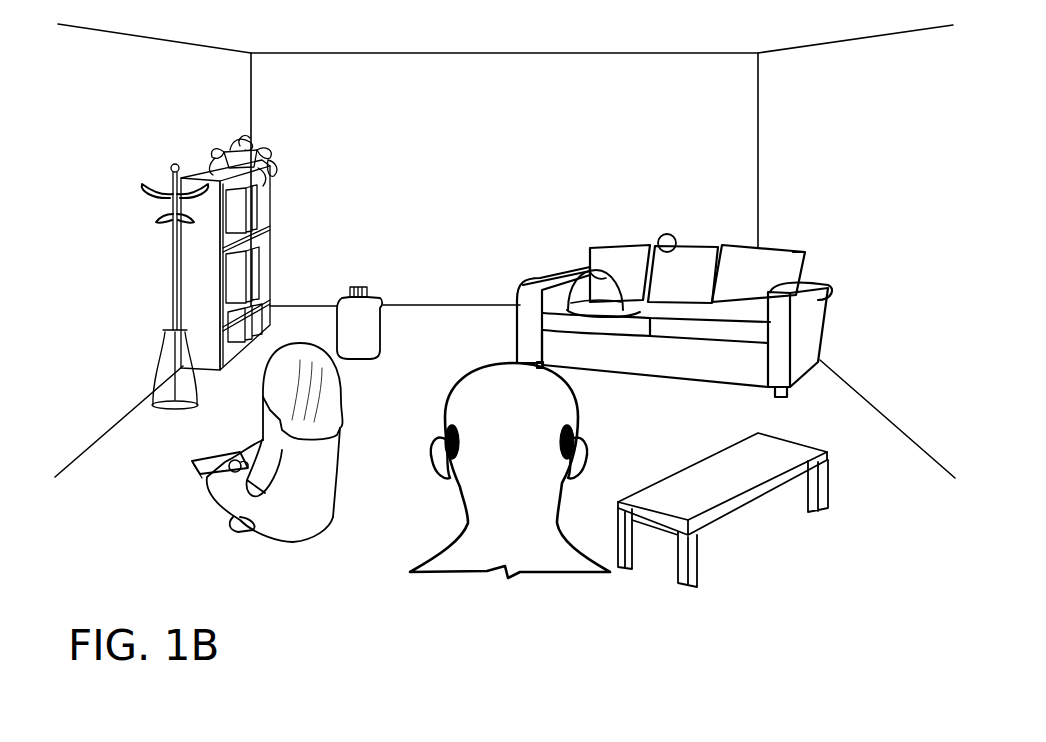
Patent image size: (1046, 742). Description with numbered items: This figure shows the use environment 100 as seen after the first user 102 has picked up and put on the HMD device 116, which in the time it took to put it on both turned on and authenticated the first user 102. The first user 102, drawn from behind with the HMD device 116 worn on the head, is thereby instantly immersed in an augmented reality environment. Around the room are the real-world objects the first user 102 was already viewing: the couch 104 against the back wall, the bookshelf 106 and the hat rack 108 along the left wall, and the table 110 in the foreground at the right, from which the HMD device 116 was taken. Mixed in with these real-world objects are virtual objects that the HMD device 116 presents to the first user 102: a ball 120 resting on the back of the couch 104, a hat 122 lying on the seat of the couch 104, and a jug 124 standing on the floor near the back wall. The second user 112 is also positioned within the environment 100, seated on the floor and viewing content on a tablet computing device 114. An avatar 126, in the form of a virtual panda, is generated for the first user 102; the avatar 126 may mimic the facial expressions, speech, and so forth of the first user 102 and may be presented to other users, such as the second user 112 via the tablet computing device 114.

The use environment 100 is at (601, 62).
The first user 102 is at (537, 436).
The couch 104 is at (703, 289).
The bookshelf 106 is at (296, 224).
The hat rack 108 is at (160, 248).
The table 110 is at (763, 473).
The second user 112 is at (340, 387).
The tablet computing device 114 is at (186, 472).
The HMD device 116 is at (447, 478).
The ball 120 is at (672, 234).
The hat 122 is at (590, 270).
The jug 124 is at (378, 340).
The avatar 126 is at (230, 450).